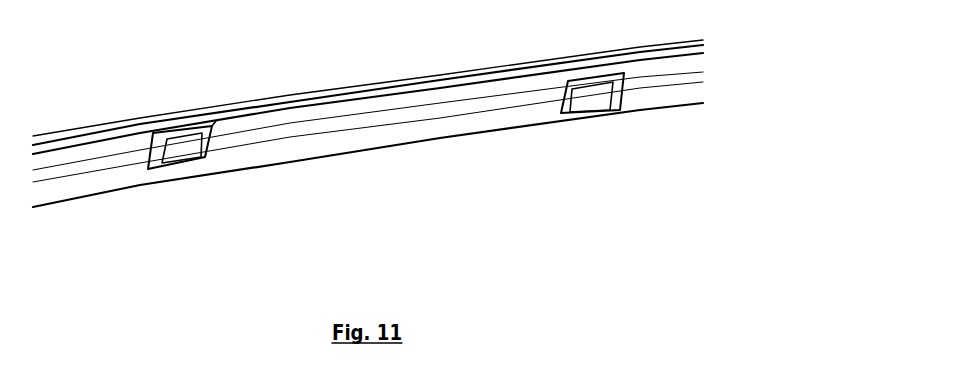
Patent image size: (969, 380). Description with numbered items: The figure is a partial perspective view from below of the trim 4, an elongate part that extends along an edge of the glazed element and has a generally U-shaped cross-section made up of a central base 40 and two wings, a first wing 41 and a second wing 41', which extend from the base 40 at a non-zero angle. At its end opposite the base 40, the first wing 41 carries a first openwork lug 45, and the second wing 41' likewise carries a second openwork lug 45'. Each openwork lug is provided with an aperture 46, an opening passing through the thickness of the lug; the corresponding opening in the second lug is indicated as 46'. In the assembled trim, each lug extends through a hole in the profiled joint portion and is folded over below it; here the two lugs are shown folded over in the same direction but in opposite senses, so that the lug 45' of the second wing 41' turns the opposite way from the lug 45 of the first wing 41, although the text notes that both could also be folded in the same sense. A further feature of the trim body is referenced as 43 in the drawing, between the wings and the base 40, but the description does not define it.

The trim 4 is at (252, 63).
The first wing 41 is at (368, 97).
The second wing 41' is at (368, 160).
The base 40 is at (343, 117).
The rib 43 is at (478, 117).
The first openwork lug 45 is at (167, 186).
The aperture 46 is at (210, 175).
The second openwork lug 45' is at (575, 132).
The second opening 46' is at (621, 122).